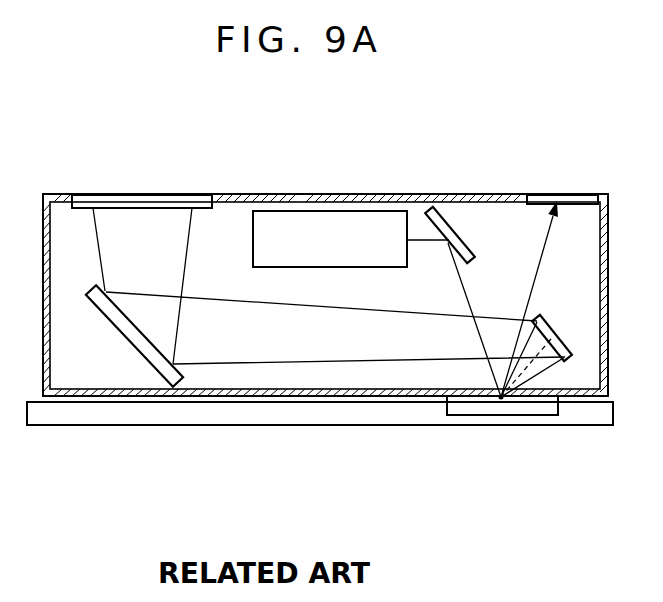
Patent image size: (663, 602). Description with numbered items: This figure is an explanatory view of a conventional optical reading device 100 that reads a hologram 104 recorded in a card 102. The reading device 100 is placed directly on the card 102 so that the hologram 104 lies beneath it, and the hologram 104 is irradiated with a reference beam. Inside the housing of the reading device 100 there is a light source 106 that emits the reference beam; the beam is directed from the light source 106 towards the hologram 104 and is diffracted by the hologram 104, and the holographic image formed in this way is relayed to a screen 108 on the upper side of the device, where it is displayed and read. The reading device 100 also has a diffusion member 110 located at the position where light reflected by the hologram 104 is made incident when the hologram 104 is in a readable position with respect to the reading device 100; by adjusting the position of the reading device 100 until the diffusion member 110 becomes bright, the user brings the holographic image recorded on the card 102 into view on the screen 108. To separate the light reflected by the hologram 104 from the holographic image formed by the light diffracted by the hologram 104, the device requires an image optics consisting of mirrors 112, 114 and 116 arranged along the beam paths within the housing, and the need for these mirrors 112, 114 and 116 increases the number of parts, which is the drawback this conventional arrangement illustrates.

The reading device 100 is at (299, 182).
The card 102 is at (298, 418).
The hologram 104 is at (468, 412).
The light source 106 is at (367, 226).
The screen 108 is at (148, 196).
The diffusion member 110 is at (576, 197).
The mirror 112 is at (440, 204).
The mirror 114 is at (566, 340).
The mirror 116 is at (130, 340).